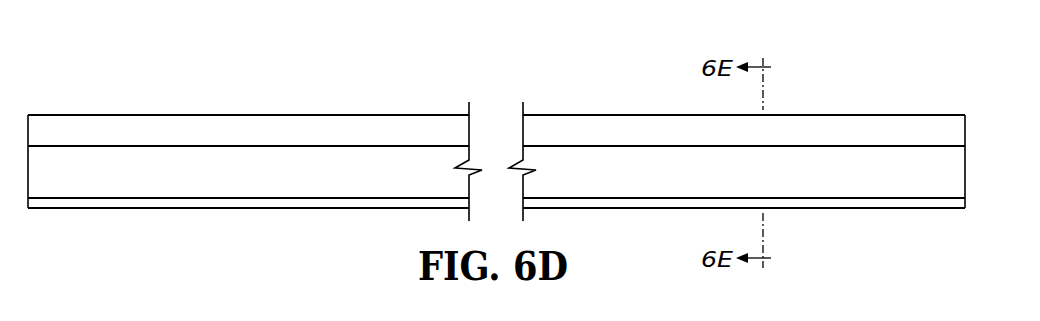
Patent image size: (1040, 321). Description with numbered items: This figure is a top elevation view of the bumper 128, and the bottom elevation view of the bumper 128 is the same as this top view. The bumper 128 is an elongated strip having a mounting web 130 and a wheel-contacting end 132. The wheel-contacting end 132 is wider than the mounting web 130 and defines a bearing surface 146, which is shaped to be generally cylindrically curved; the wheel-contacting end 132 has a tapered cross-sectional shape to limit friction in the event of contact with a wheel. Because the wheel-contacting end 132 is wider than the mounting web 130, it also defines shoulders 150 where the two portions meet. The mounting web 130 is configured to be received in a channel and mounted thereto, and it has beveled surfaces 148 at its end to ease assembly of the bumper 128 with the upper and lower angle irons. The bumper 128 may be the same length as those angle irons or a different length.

The bumper 128 is at (948, 90).
The wheel-contacting end 132 is at (952, 130).
The mounting web 130 is at (952, 174).
The beveled surfaces 148 is at (952, 203).
The bearing surface 146 is at (818, 114).
The shoulders 150 is at (880, 146).